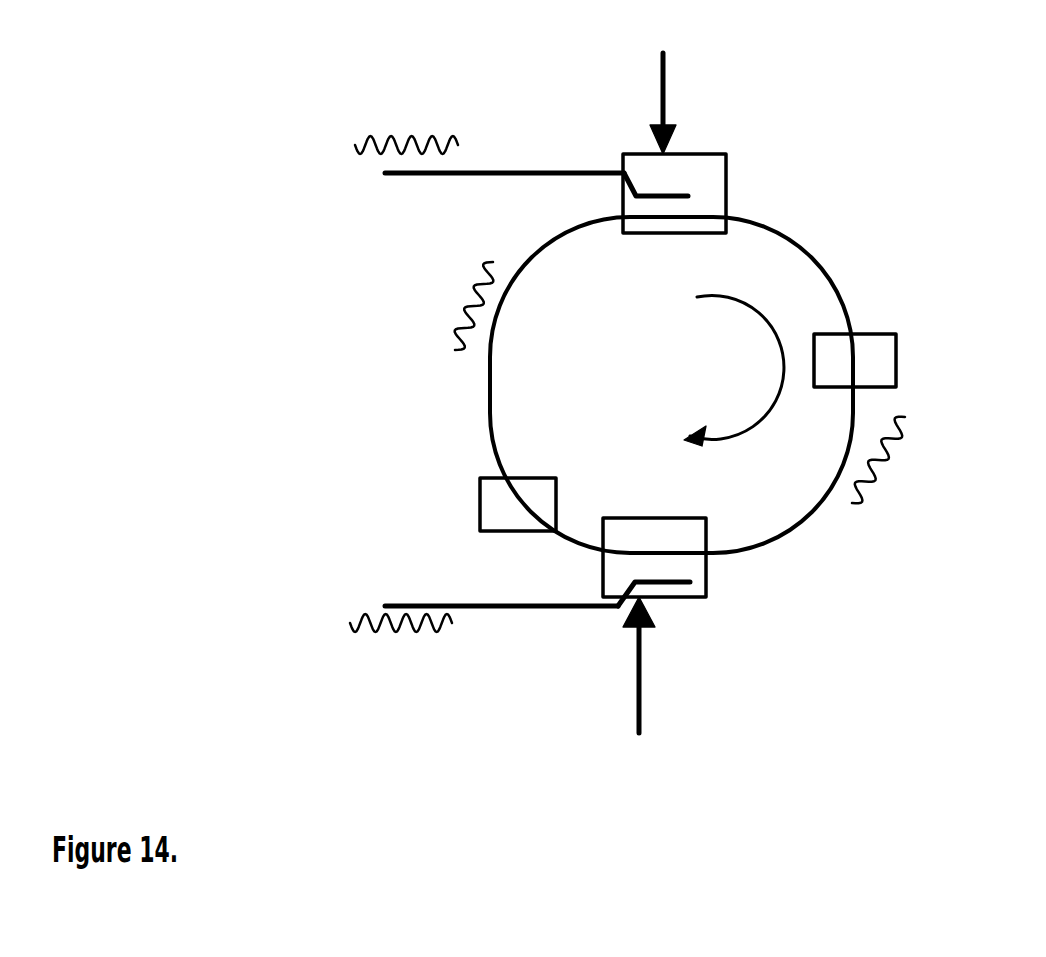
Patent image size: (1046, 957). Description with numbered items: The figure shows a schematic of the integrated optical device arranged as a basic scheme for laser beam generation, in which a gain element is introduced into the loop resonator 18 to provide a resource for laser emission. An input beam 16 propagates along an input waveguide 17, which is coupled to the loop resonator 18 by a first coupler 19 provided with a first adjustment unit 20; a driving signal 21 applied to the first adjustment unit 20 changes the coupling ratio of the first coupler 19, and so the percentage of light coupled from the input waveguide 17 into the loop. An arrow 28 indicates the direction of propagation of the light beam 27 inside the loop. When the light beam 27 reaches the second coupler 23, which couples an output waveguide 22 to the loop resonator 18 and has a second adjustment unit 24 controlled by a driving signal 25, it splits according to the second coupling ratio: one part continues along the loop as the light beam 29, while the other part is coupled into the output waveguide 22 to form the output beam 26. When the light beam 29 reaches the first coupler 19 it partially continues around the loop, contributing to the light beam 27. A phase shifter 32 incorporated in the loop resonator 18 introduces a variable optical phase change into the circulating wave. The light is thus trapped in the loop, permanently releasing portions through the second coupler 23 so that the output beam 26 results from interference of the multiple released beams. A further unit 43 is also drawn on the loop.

The input beam 16 is at (389, 114).
The input waveguide 17 is at (504, 153).
The loop resonator 18 is at (671, 376).
The first coupler 19 is at (672, 213).
The first adjustment unit 20 is at (674, 176).
The driving signal 21 is at (651, 96).
The output waveguide 22 is at (501, 584).
The second coupler 23 is at (683, 559).
The second adjustment unit 24 is at (654, 580).
The driving signal 25 is at (656, 665).
The output beam 26 is at (386, 653).
The light beam 27 is at (896, 460).
The arrow 28 is at (734, 370).
The light beam 29 is at (455, 314).
The phase shifter 32 is at (876, 344).
The unit on loop 43 is at (495, 499).